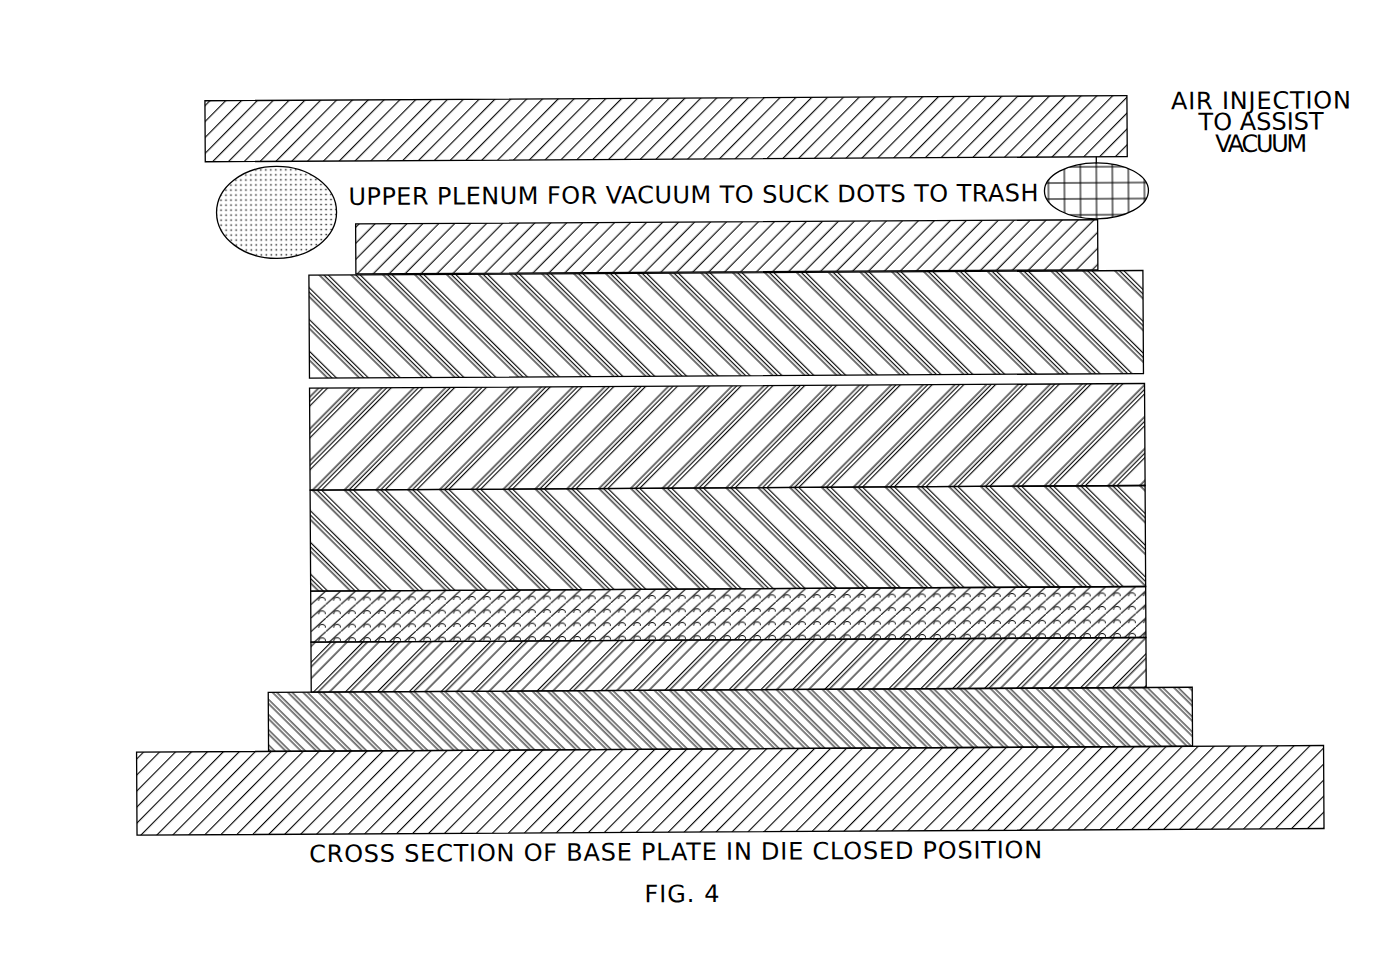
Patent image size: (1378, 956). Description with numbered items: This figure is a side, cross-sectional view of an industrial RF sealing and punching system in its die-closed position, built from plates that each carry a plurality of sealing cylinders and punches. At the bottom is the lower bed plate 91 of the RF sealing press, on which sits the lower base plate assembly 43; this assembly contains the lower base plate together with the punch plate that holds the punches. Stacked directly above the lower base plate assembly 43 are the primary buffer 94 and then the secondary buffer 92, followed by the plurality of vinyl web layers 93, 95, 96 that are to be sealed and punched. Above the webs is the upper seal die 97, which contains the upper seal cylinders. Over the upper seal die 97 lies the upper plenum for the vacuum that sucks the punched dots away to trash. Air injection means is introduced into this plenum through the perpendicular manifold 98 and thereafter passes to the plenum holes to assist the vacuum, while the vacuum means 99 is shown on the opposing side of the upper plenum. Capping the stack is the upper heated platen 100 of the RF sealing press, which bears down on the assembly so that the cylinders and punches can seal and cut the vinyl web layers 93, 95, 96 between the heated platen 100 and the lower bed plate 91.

The upper heated platen 100 is at (683, 98).
The vacuum means 99 is at (218, 212).
The perpendicular manifold 98 is at (1148, 202).
The upper seal die 97 is at (1100, 247).
The vinyl web 96 is at (310, 338).
The vinyl web 95 is at (310, 445).
The vinyl web 93 is at (312, 547).
The secondary buffer 92 is at (312, 618).
The primary buffer 94 is at (312, 672).
The lower base plate assembly 43 is at (266, 735).
The lower bed plate 91 is at (1266, 745).